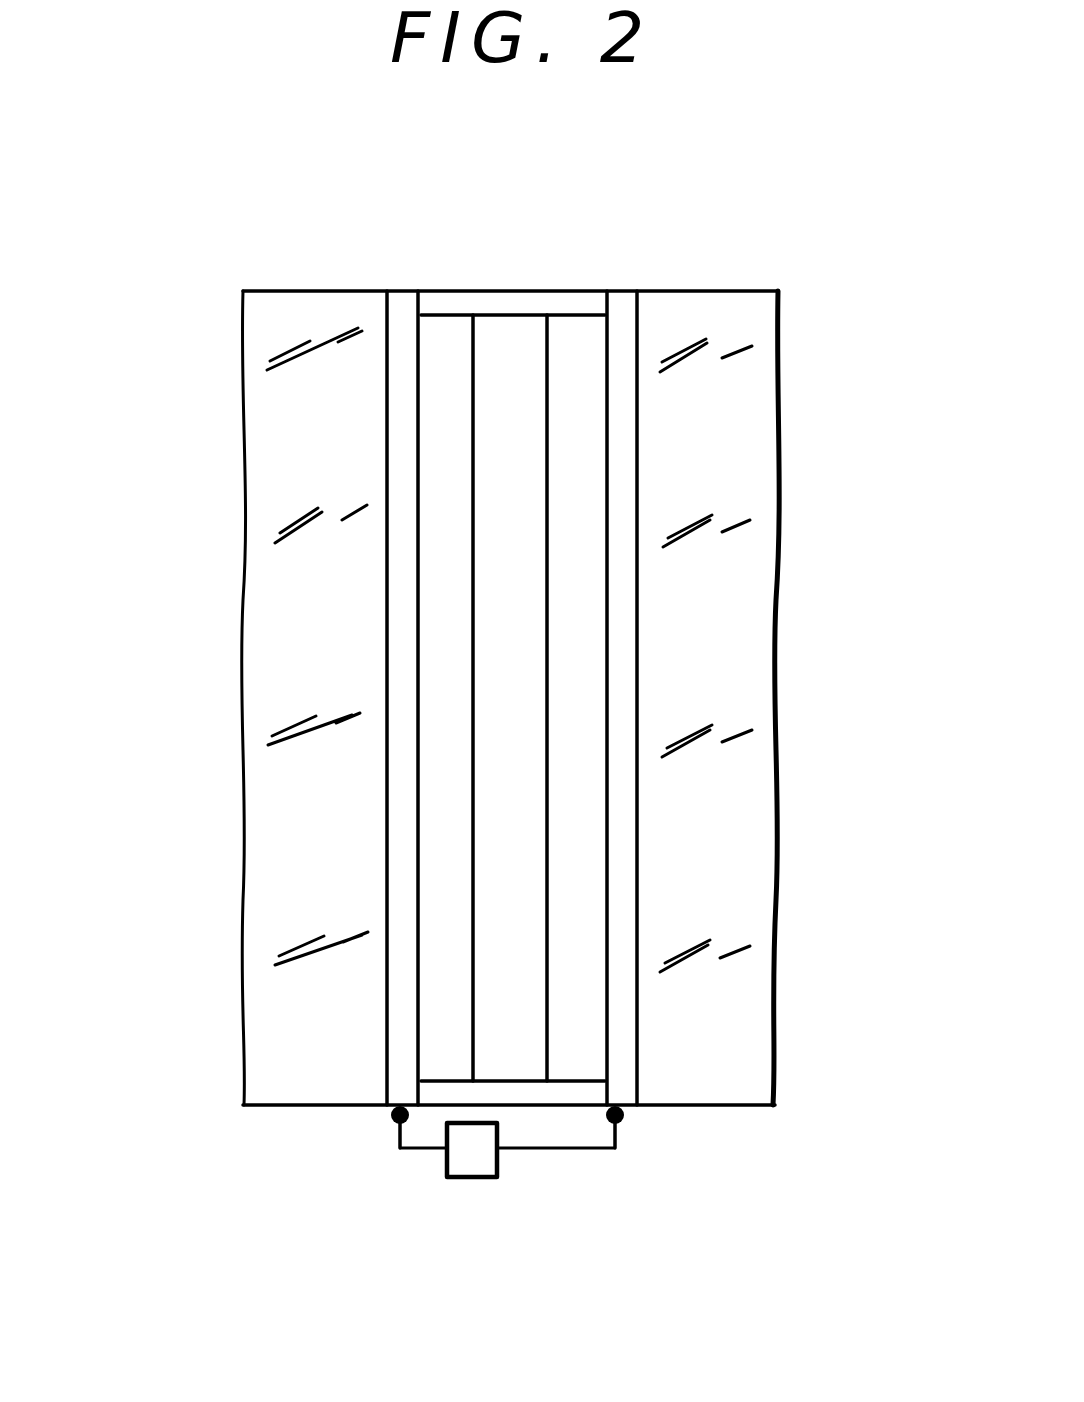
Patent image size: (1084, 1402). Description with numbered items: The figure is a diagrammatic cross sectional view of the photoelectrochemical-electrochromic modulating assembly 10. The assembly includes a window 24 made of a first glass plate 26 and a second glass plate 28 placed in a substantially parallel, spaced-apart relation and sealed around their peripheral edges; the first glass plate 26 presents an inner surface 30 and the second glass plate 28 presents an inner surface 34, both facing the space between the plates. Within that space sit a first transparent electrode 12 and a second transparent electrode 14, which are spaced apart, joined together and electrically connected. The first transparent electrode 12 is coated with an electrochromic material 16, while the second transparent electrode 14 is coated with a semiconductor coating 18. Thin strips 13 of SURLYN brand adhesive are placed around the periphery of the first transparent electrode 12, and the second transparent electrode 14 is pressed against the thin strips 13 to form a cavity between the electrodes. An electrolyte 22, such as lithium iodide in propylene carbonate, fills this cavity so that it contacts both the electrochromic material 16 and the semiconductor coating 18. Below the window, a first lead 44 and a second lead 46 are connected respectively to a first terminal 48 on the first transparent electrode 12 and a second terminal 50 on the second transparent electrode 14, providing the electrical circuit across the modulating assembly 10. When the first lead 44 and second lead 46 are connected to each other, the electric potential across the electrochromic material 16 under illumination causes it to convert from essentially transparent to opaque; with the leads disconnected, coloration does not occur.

The modulating assembly 10 is at (778, 210).
The first transparent electrode 12 is at (620, 432).
The thin strips 13 is at (508, 305).
The second transparent electrode 14 is at (397, 410).
The electrochromic material 16 is at (587, 357).
The semiconductor coating 18 is at (425, 335).
The electrolyte 22 is at (522, 1060).
The window 24 is at (788, 856).
The first glass plate 26 is at (700, 607).
The second glass plate 28 is at (303, 568).
The inner surface 30 is at (640, 1052).
The inner surface 34 is at (390, 1058).
The first lead 44 is at (625, 1120).
The second lead 46 is at (400, 1126).
The first terminal 48 is at (627, 1122).
The second terminal 50 is at (395, 1112).